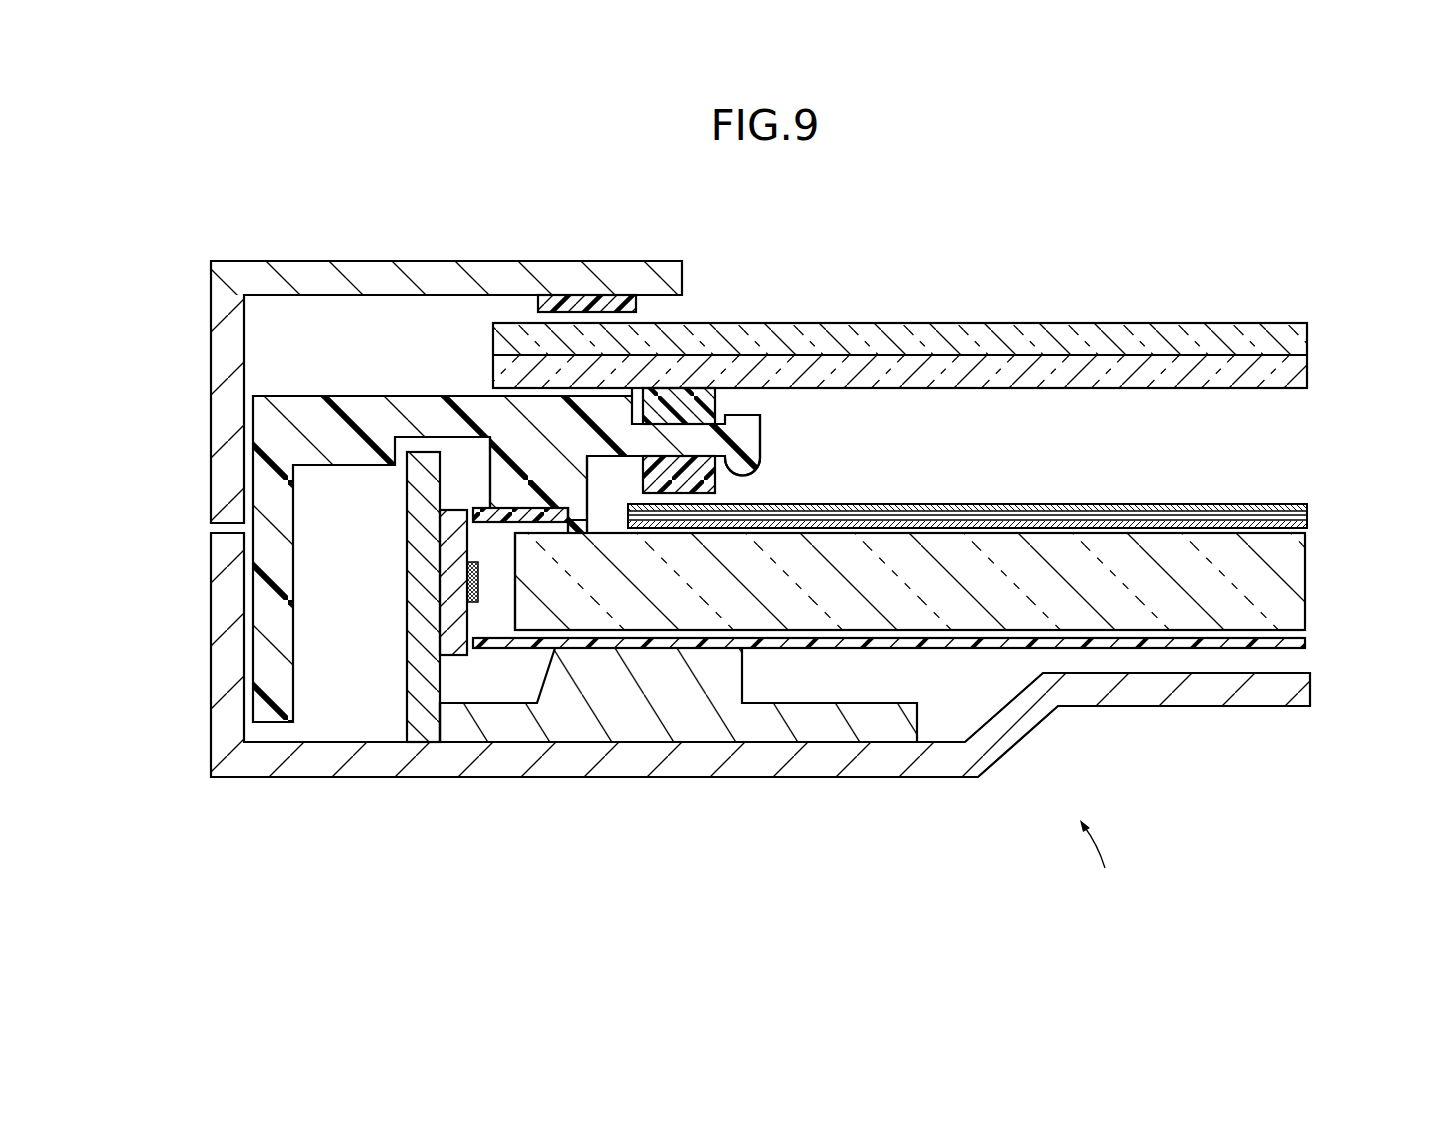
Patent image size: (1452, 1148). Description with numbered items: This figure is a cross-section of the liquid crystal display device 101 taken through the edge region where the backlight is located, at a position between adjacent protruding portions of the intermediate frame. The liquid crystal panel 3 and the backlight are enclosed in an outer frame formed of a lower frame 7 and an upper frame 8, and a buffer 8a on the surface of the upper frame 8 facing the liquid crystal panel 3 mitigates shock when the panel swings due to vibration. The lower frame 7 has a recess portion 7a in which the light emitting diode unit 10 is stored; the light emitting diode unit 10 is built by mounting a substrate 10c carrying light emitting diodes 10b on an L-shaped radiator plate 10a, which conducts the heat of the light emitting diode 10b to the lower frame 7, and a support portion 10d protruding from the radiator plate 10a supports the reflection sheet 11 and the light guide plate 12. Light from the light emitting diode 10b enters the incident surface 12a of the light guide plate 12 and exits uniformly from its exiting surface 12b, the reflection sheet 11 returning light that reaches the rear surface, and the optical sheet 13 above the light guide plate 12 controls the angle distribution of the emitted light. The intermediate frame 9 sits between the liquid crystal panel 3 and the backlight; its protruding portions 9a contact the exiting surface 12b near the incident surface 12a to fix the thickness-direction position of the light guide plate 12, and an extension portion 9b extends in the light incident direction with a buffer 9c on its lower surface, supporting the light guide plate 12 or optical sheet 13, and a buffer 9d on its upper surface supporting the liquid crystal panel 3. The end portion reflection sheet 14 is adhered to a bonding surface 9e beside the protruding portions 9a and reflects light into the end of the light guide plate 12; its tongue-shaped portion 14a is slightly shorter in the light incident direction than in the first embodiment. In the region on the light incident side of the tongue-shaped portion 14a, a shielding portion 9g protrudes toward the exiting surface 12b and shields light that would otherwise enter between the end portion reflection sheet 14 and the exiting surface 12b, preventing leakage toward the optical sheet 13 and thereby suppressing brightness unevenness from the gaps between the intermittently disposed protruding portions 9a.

The liquid crystal panel 3 is at (1290, 343).
The lower frame 7 is at (726, 693).
The recess portion 7a is at (950, 735).
The upper frame 8 is at (228, 381).
The buffer 8a is at (580, 300).
The intermediate frame 9 is at (522, 519).
The protruding portion 9a is at (556, 526).
The extension portion 9b is at (747, 440).
The buffer 9c is at (717, 482).
The buffer 9d is at (690, 394).
The bonding surface 9e is at (530, 507).
The shielding portion 9g is at (611, 533).
The light emitting diode unit 10 is at (650, 699).
The radiator plate 10a is at (542, 849).
The light emitting diode 10b is at (478, 582).
The substrate 10c is at (456, 640).
The support portion 10d is at (665, 690).
The reflection sheet 11 is at (1293, 647).
The light guide plate 12 is at (951, 536).
The incident surface 12a is at (513, 562).
The exiting surface 12b is at (590, 532).
The optical sheet 13 is at (1332, 518).
The end portion reflection sheet 14 is at (482, 508).
The tongue-shaped portion 14a is at (541, 507).
The liquid crystal display device 101 is at (1107, 861).